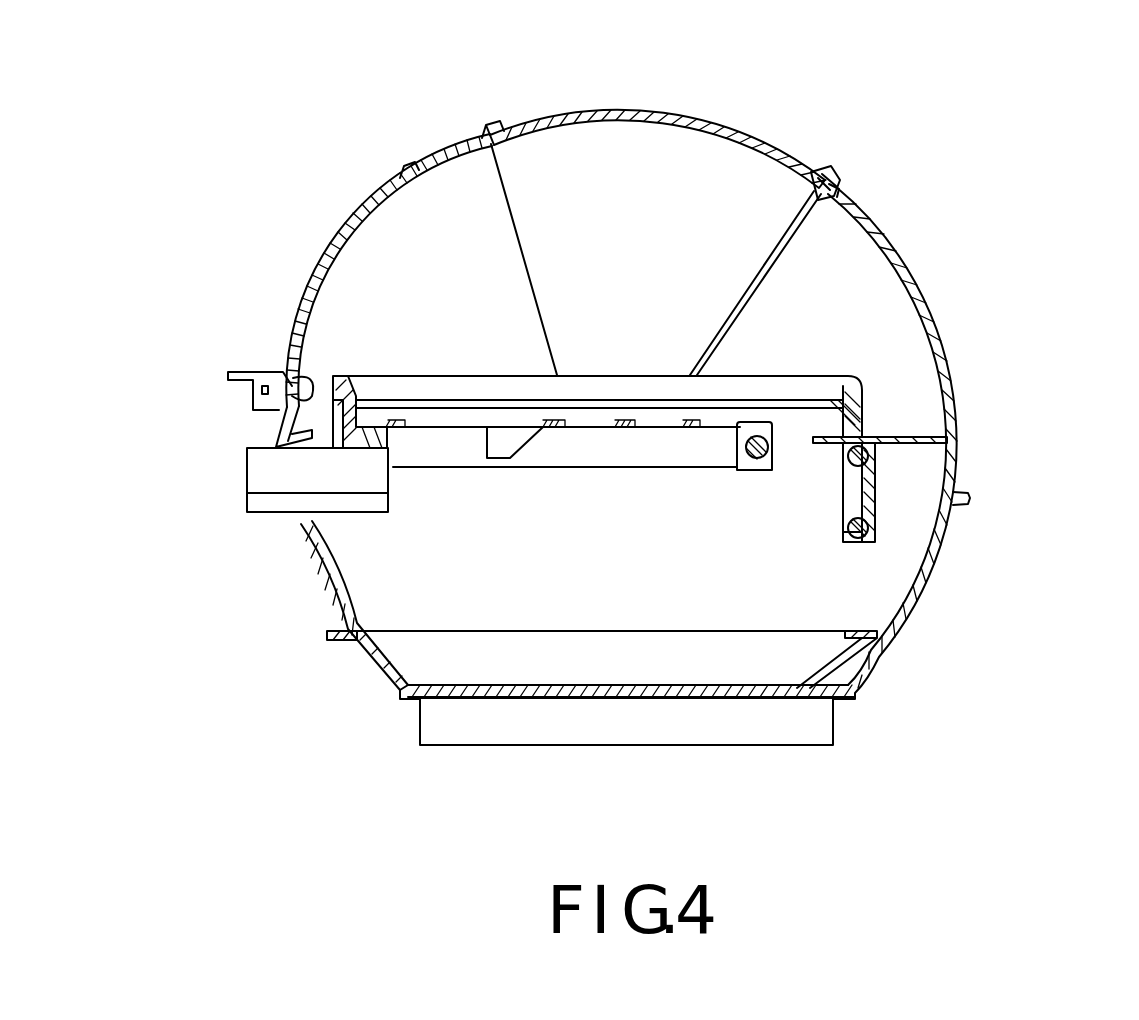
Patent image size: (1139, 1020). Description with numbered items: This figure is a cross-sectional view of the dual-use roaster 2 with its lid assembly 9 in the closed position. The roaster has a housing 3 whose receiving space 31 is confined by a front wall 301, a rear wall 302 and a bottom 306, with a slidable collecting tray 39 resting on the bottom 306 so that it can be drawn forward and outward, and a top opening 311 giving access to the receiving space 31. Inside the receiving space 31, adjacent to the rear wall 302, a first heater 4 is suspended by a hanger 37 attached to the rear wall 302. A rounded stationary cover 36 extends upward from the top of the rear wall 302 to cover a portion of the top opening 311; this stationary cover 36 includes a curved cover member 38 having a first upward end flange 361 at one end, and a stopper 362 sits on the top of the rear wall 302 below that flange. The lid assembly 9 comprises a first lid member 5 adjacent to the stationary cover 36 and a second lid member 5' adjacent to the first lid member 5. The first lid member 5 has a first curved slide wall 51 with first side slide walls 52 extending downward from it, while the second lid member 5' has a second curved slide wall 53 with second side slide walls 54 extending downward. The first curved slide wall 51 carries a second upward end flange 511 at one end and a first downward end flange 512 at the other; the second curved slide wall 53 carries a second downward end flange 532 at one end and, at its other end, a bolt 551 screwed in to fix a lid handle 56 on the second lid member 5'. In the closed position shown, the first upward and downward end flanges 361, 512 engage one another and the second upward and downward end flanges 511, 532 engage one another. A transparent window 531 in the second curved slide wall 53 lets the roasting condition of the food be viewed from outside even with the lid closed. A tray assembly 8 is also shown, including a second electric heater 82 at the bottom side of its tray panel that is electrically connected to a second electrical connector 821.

The dual-use roaster 2 is at (670, 490).
The housing 3 is at (852, 700).
The first heater 4 is at (945, 478).
The first lid member 5 is at (658, 111).
The second lid member 5' is at (370, 244).
The tray assembly 8 is at (609, 449).
The lid assembly 9 is at (532, 203).
The receiving space 31 is at (603, 590).
The stationary cover 36 is at (922, 312).
The hanger 37 is at (870, 503).
The curved cover member 38 is at (898, 264).
The slidable collecting tray 39 is at (778, 655).
The first curved slide wall 51 is at (747, 134).
The first side slide wall 52 is at (722, 195).
The second curved slide wall 53 is at (287, 358).
The second side slide wall 54 is at (365, 328).
The lid handle 56 is at (242, 384).
The second electric heater 82 is at (758, 470).
The front wall 301 is at (322, 590).
The rear wall 302 is at (912, 616).
The bottom 306 is at (450, 693).
The top opening 311 is at (435, 483).
The first upward end flange 361 is at (826, 180).
The stopper 362 is at (970, 499).
The second upward end flange 511 is at (505, 146).
The first downward end flange 512 is at (838, 188).
The transparent window 531 is at (330, 242).
The second downward end flange 532 is at (497, 128).
The bolt 551 is at (298, 378).
The second electrical connector 821 is at (265, 477).